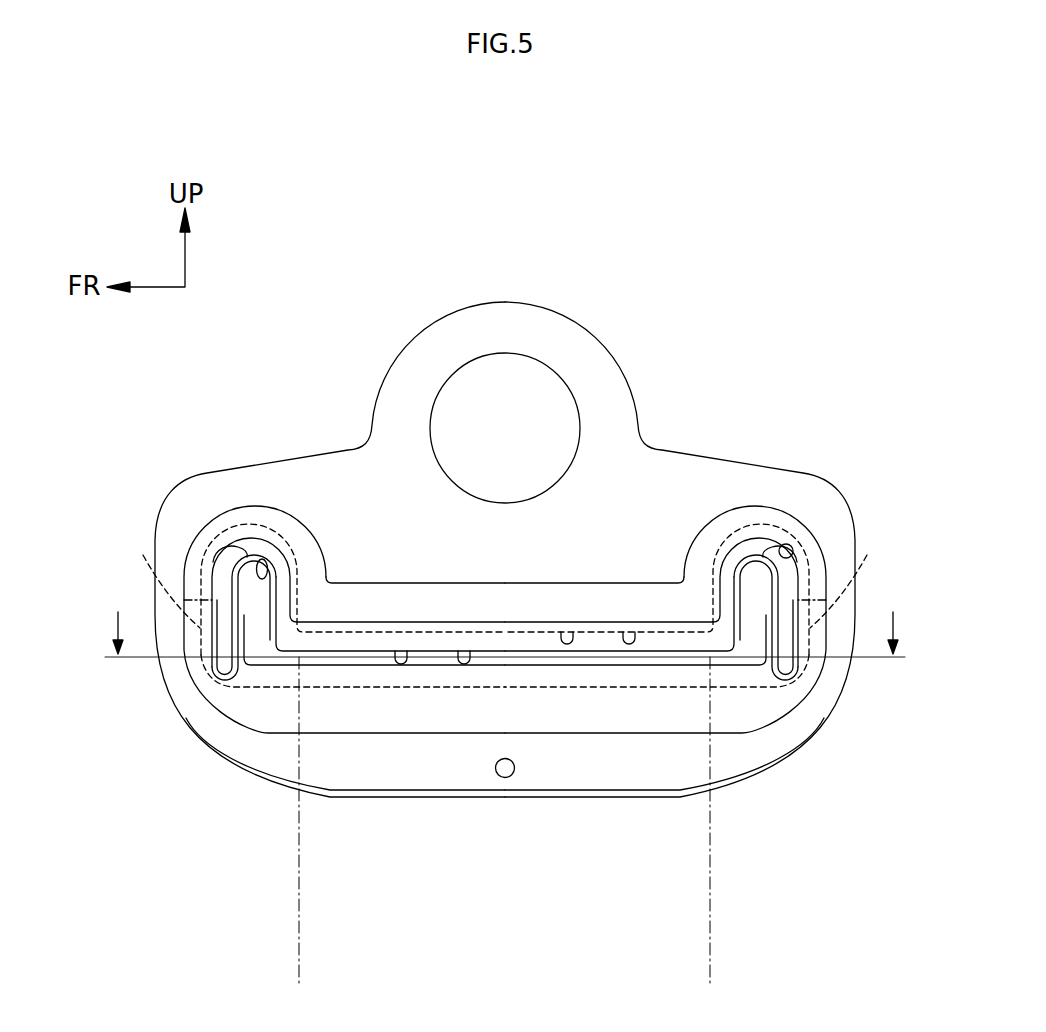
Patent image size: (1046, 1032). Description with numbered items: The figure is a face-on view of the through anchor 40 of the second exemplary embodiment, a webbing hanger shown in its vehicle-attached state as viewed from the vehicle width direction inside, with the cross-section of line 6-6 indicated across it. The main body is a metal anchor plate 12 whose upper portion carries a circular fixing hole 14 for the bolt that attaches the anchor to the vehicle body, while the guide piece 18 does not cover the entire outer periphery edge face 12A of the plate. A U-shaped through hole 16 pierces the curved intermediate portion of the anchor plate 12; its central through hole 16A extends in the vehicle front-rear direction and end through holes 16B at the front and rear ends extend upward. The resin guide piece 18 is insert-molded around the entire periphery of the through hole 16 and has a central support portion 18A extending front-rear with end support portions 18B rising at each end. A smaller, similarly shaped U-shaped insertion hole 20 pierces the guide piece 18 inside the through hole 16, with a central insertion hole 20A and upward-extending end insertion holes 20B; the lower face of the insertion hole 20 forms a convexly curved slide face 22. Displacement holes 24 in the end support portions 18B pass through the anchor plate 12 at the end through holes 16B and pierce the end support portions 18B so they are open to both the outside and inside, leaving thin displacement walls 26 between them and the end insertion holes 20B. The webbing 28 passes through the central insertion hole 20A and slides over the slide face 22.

The section line 6- 6 is at (506, 617).
The anchor plate 12 is at (396, 350).
The outer periphery edge face 12A is at (570, 795).
The fixing hole 14 is at (521, 366).
The through hole 16 is at (567, 632).
The central through hole 16A is at (630, 632).
The end through holes 16B is at (143, 555).
The guide piece 18 is at (237, 498).
The central support portion 18A is at (511, 580).
The end support portions 18B is at (262, 502).
The insertion hole 20 is at (400, 650).
The central insertion hole 20A is at (463, 650).
The end insertion holes 20B is at (265, 562).
The slide face 22 is at (423, 675).
The displacement holes 24 is at (236, 562).
The displacement walls 26 is at (260, 578).
The webbing 28 is at (298, 860).
The through anchor 40 is at (285, 300).